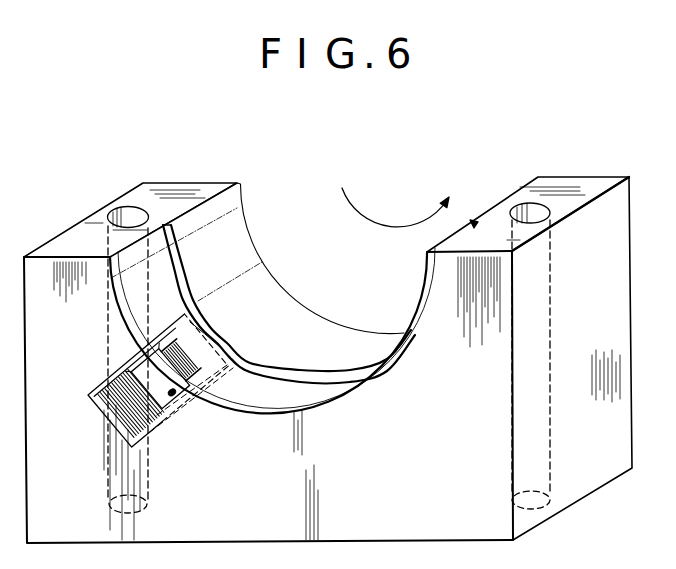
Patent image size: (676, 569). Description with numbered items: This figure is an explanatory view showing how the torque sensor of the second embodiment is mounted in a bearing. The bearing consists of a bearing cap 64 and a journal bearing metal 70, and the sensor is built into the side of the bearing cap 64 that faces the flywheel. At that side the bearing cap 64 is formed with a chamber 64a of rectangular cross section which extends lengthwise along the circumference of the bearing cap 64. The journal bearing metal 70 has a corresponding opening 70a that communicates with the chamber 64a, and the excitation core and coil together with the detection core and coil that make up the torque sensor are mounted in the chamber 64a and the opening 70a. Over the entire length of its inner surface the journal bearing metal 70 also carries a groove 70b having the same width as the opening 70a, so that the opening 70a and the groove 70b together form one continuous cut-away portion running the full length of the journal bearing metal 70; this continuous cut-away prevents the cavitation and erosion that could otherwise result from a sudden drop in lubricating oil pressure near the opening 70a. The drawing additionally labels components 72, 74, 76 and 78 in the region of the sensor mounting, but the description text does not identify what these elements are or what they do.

The bearing cap 64 is at (572, 186).
The chamber 64a is at (204, 409).
The journal bearing metal 70 is at (352, 335).
The opening 70a is at (207, 318).
The groove 70b is at (310, 398).
The coil spring 72 is at (115, 408).
The clamp plate 74 is at (95, 388).
The fastening screw 76 is at (172, 392).
The clamp block 78 is at (147, 367).